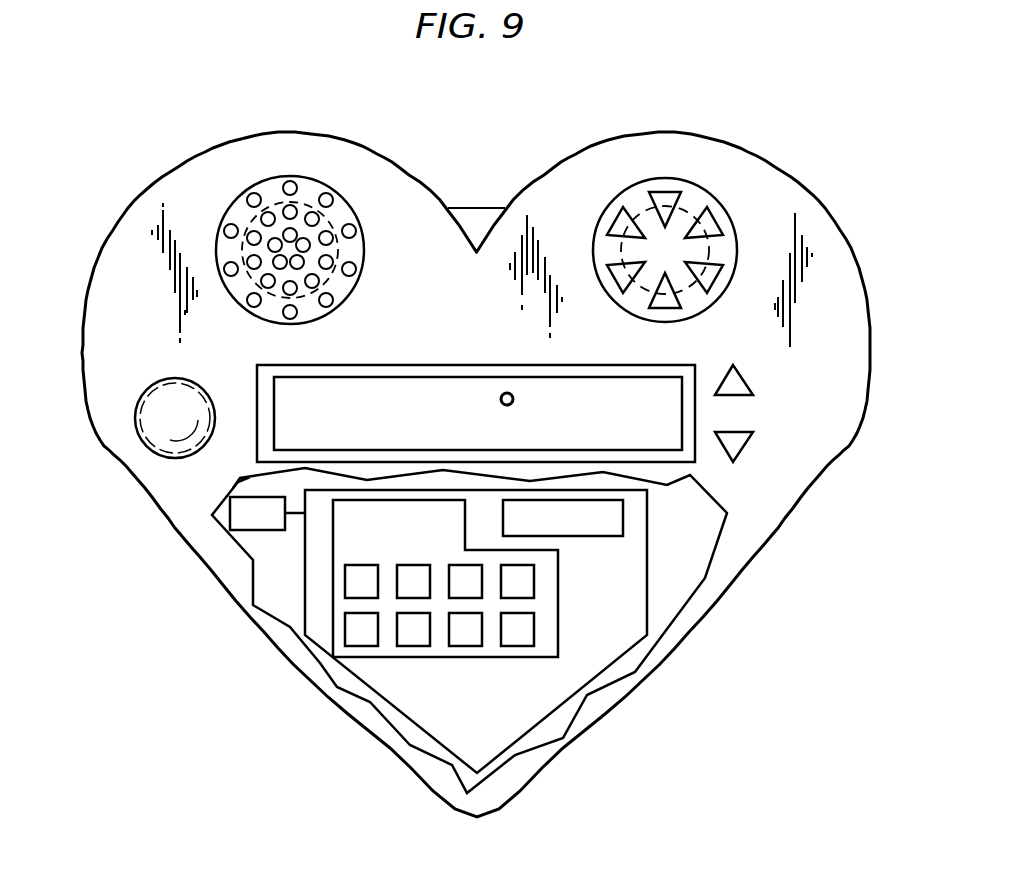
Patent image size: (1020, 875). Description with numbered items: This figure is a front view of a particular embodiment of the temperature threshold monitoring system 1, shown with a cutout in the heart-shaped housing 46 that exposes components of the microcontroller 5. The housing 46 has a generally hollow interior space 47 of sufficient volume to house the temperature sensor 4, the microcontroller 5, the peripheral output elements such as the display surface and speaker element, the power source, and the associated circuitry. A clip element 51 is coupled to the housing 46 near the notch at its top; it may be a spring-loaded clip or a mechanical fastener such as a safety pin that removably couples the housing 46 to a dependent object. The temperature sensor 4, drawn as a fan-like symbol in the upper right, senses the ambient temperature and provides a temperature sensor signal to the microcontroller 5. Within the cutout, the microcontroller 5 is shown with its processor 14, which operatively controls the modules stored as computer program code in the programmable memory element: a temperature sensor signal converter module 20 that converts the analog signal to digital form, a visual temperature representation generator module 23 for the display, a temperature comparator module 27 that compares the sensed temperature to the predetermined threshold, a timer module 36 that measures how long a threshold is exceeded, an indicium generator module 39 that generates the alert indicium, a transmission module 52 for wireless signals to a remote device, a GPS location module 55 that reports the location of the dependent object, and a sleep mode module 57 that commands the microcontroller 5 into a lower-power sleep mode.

The temperature threshold monitoring system 1 is at (323, 77).
The clip element 51 is at (478, 220).
The housing 46 is at (544, 220).
The temperature sensor 4 is at (693, 213).
The processor 14 is at (563, 518).
The hollow interior space 47 is at (694, 532).
The temperature sensor signal converter module 20 is at (361, 581).
The visual temperature representation generator module 23 is at (413, 581).
The temperature comparator module 27 is at (465, 581).
The timer module 36 is at (517, 581).
The indicium generator module 39 is at (361, 629).
The transmission module 52 is at (413, 629).
The Global Positioning System (GPS) location module 55 is at (465, 629).
The sleep mode module 57 is at (517, 629).
The microcontroller 5 is at (648, 615).